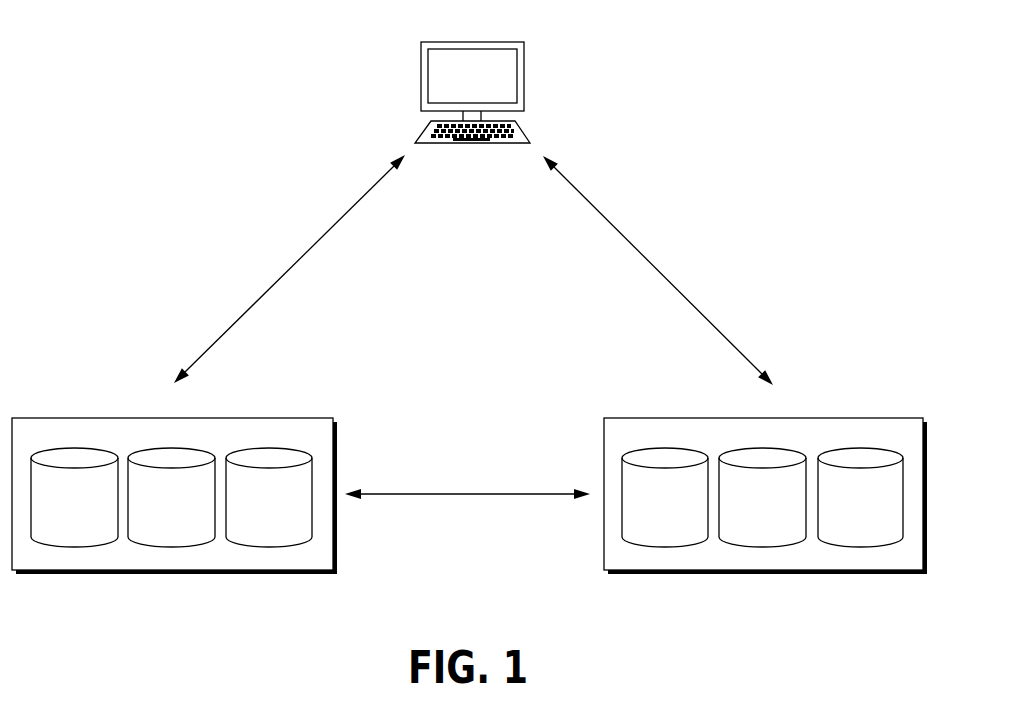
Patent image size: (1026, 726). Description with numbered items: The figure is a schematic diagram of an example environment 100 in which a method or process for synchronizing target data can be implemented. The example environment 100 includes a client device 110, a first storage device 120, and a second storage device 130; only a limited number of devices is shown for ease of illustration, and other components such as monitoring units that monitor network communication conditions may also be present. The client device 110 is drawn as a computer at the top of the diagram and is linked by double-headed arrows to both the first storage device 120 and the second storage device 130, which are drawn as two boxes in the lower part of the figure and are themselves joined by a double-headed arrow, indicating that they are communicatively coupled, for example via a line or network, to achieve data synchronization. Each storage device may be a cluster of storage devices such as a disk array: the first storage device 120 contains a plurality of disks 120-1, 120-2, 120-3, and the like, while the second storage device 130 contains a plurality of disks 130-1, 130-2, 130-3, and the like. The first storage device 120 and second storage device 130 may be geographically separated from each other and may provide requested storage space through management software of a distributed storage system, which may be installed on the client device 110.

The example environment 100 is at (242, 27).
The client device 110 is at (512, 42).
The first storage device 120 is at (174, 482).
The disk 120-1 is at (53, 522).
The disk 120-2 is at (150, 522).
The disk 120-3 is at (291, 522).
The second storage device 130 is at (765, 482).
The disk 130-1 is at (687, 522).
The disk 130-2 is at (741, 522).
The disk 130-3 is at (839, 522).